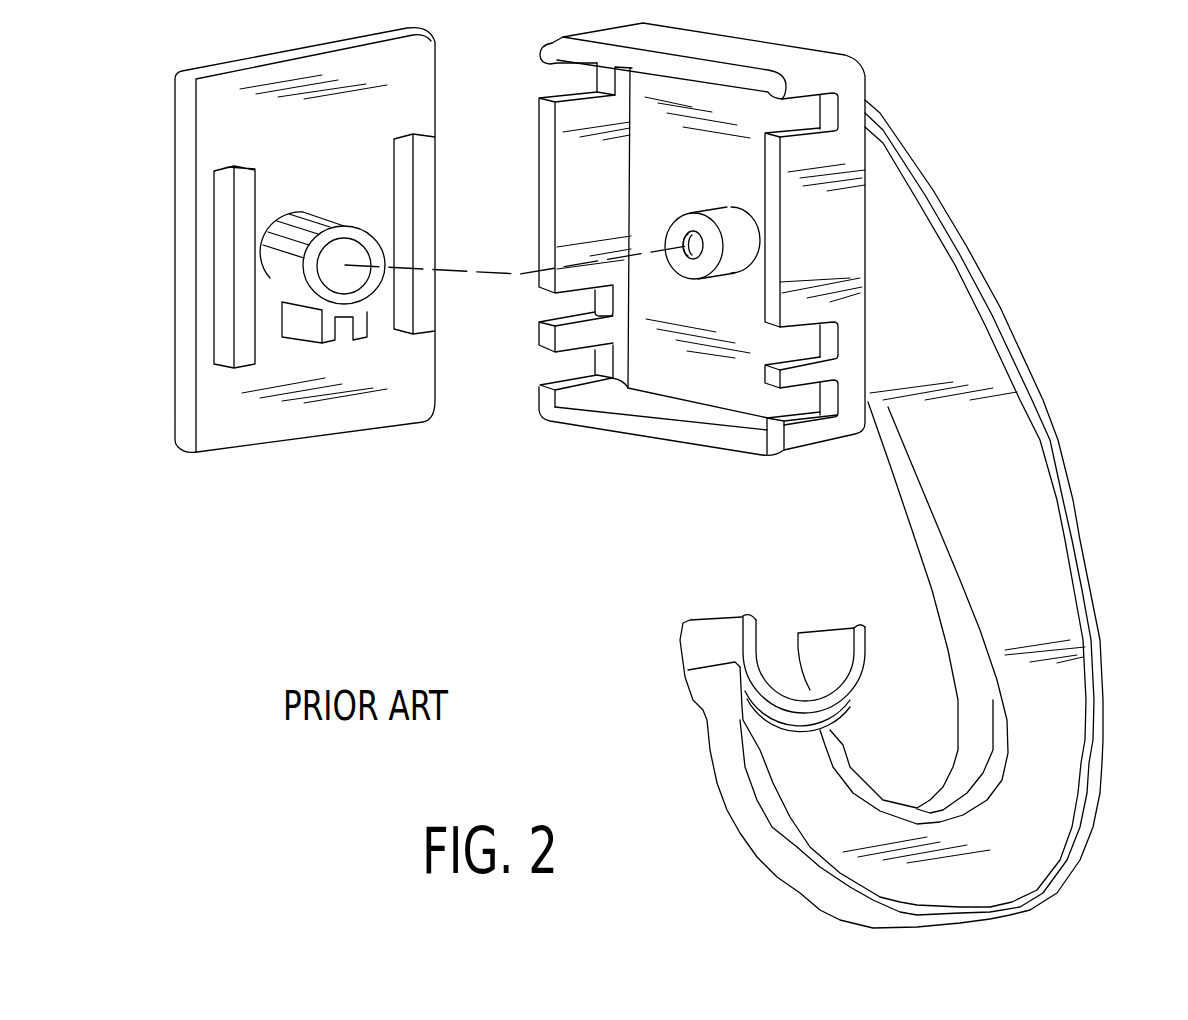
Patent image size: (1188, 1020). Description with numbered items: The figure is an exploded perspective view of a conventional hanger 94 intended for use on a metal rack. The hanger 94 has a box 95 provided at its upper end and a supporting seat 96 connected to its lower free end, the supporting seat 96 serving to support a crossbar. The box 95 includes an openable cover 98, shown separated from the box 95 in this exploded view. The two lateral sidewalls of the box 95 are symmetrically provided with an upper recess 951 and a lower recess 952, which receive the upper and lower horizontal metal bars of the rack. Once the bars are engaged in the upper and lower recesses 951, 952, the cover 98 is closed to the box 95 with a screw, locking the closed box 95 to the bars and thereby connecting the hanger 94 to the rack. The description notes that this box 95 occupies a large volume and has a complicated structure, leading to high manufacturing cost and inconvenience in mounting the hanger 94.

The hanger 94 is at (1048, 515).
The box 95 is at (789, 276).
The upper recess 951 is at (832, 115).
The lower recess 952 is at (798, 343).
The supporting seat 96 is at (703, 645).
The openable cover 98 is at (332, 434).